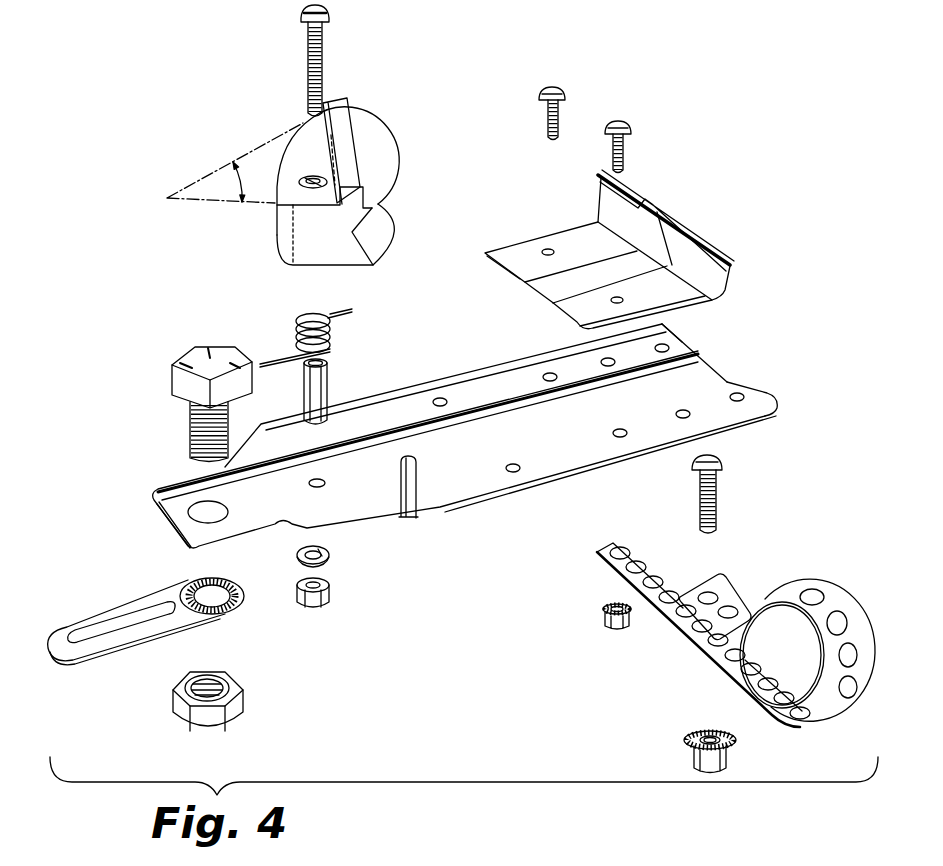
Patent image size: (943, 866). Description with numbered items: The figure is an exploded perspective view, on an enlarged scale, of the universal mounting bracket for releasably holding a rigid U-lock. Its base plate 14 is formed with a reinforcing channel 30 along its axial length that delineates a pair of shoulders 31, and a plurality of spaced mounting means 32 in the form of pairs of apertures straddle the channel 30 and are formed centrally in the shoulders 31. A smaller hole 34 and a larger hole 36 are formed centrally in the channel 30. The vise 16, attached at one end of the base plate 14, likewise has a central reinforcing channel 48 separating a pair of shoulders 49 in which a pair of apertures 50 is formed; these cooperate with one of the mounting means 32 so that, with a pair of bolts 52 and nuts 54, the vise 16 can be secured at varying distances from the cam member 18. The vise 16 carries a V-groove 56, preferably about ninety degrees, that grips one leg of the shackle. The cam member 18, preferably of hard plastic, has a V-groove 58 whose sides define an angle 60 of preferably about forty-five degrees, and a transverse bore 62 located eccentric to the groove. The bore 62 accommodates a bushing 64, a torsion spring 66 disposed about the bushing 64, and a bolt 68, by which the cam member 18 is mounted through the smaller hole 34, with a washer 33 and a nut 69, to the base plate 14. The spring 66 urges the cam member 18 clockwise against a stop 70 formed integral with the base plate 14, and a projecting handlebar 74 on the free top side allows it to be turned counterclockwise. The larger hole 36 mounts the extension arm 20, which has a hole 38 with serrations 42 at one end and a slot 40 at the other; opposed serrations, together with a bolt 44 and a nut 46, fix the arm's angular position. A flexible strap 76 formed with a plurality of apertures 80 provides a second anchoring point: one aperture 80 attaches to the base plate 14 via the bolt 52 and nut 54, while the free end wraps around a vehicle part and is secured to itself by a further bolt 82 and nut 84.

The base plate 14 is at (500, 511).
The vise 16 is at (733, 276).
The cam member 18 is at (393, 143).
The extension arm 20 is at (127, 603).
The reinforcing channel 30 is at (720, 361).
The shoulders 31 is at (676, 332).
The mounting means 32 is at (505, 467).
The washer 33 is at (333, 556).
The smaller hole 34 is at (325, 482).
The larger hole 36 is at (158, 508).
The hole 38 is at (218, 581).
The slot 40 is at (84, 644).
The serrations 42 is at (192, 583).
The bolt 44 is at (183, 388).
The nut 46 is at (246, 700).
The central reinforcing channel 48 is at (538, 297).
The shoulders 49 is at (497, 262).
The apertures 50 is at (548, 249).
The bolts 52 is at (543, 113).
The nuts 54 is at (602, 614).
The V-groove 56 is at (604, 197).
The V-groove 58 is at (364, 234).
The angle 60 is at (235, 163).
The transverse bore 62 is at (310, 177).
The bushing 64 is at (328, 388).
The torsion spring 66 is at (301, 320).
The bolt 68 is at (308, 48).
The nut 69 is at (332, 597).
The stop 70 is at (417, 484).
The handlebar 74 is at (338, 110).
The flexible strap 76 is at (672, 651).
The apertures 80 is at (632, 556).
The bolt 82 is at (716, 493).
The nut 84 is at (692, 752).